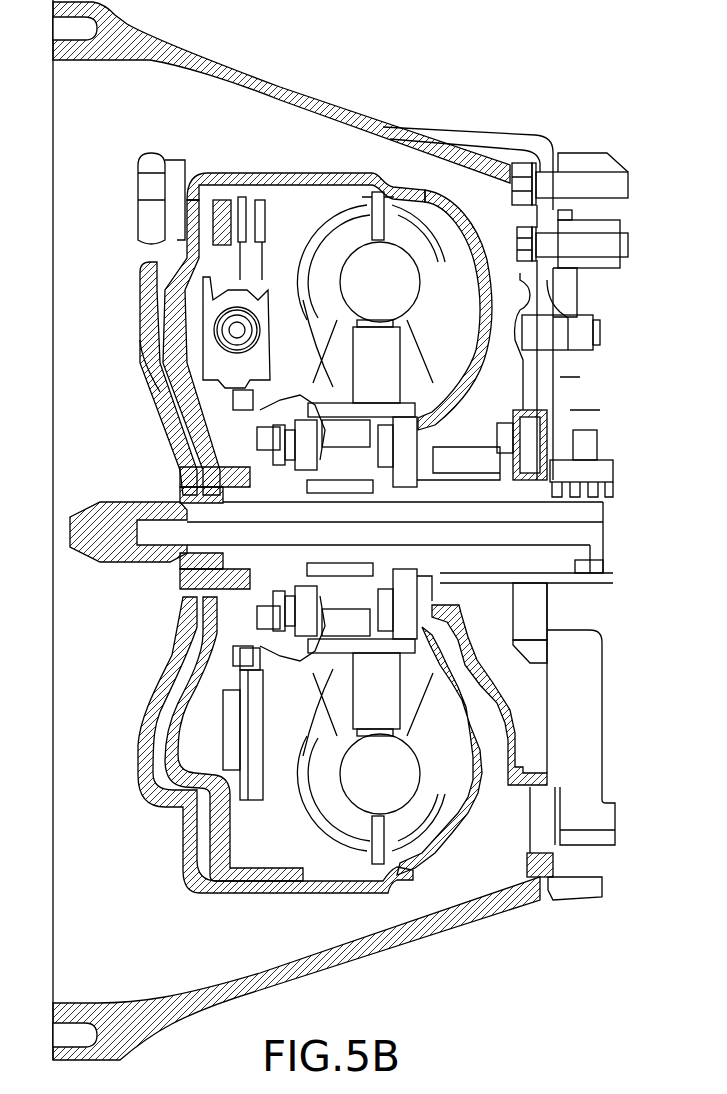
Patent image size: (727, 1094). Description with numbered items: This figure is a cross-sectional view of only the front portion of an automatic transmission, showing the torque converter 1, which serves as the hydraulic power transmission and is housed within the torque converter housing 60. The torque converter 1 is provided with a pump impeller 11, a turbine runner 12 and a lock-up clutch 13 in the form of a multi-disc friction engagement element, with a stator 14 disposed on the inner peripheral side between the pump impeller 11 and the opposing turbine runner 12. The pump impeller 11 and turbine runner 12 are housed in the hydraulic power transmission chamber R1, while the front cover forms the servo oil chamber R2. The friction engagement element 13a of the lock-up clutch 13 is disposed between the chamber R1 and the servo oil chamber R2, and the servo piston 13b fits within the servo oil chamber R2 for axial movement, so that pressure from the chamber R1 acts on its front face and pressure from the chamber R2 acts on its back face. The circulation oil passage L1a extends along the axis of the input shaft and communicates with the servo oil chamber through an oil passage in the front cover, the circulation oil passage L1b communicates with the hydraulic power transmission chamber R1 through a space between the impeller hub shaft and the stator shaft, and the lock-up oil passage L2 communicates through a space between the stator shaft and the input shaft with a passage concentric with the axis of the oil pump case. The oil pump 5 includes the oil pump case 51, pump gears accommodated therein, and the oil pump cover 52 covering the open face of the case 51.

The torque converter housing 60 is at (220, 60).
The lock-up clutch 13 is at (217, 172).
The friction engagement element 13a is at (240, 200).
The servo piston 13b is at (163, 285).
The torque converter 1 is at (312, 158).
The turbine runner 12 is at (350, 200).
The pump impeller 11 is at (431, 238).
The oil pump case 51 is at (508, 273).
The oil pump 5 is at (590, 300).
The oil pump cover 52 is at (565, 378).
The stator 14 is at (388, 360).
The hydraulic power transmission chamber R1 is at (380, 528).
The servo oil chamber R2 is at (158, 368).
The circulation oil passage L1a is at (200, 535).
The circulation oil passage L1b is at (450, 505).
The lock-up oil passage L2 is at (565, 500).